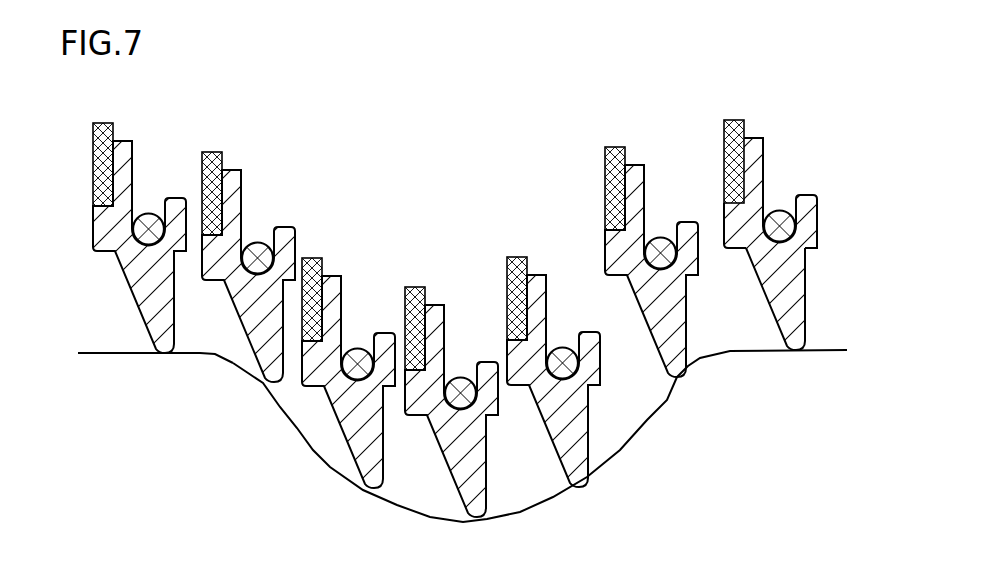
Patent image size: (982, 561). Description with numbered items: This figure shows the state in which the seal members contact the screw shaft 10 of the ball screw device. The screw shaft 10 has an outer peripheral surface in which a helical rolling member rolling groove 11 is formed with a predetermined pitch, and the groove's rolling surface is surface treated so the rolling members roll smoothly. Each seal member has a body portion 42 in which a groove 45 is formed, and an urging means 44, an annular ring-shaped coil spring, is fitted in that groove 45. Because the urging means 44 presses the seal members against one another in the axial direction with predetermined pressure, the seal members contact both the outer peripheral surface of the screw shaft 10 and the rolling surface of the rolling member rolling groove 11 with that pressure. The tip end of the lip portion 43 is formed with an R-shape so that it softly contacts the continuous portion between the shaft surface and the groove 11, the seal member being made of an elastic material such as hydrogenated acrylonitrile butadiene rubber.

The screw shaft 10 is at (823, 350).
The rolling member rolling groove 11 is at (618, 447).
The body portion 42 is at (807, 236).
The lip portion 43 is at (782, 308).
The urging means 44 is at (795, 220).
The groove 45 is at (782, 207).